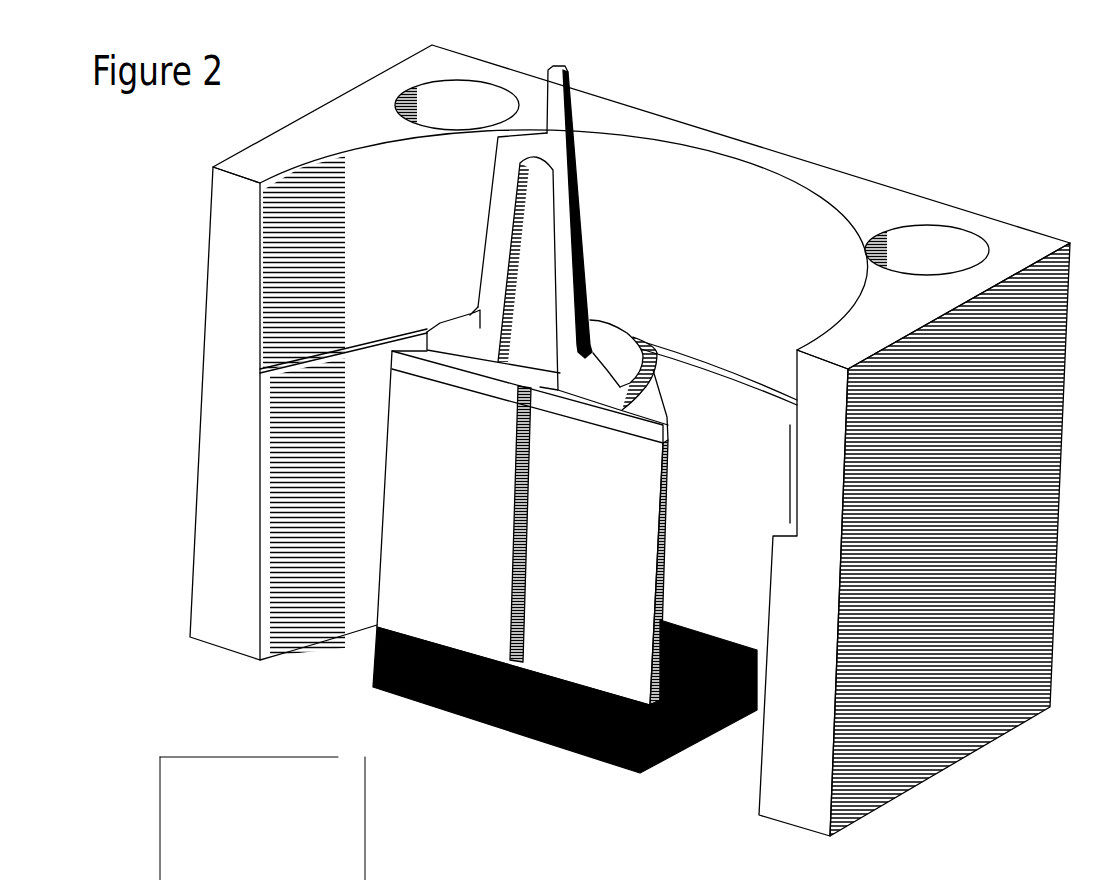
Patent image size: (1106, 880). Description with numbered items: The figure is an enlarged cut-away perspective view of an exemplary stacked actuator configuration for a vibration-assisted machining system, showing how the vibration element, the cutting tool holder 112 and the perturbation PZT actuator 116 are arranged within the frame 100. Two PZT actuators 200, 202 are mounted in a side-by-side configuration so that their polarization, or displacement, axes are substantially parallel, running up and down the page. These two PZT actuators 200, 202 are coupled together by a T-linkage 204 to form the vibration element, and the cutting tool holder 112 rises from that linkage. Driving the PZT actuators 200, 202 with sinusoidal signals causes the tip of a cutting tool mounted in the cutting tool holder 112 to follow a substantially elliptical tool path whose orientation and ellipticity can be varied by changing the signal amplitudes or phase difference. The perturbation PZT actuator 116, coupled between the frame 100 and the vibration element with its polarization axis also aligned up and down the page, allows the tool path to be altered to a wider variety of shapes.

The frame 100 is at (967, 761).
The cutting tool holder 112 is at (573, 100).
The perturbation PZT actuator 116 is at (550, 742).
The PZT actuator 200 is at (385, 493).
The PZT actuator 202 is at (522, 632).
The T-linkage 204 is at (593, 282).